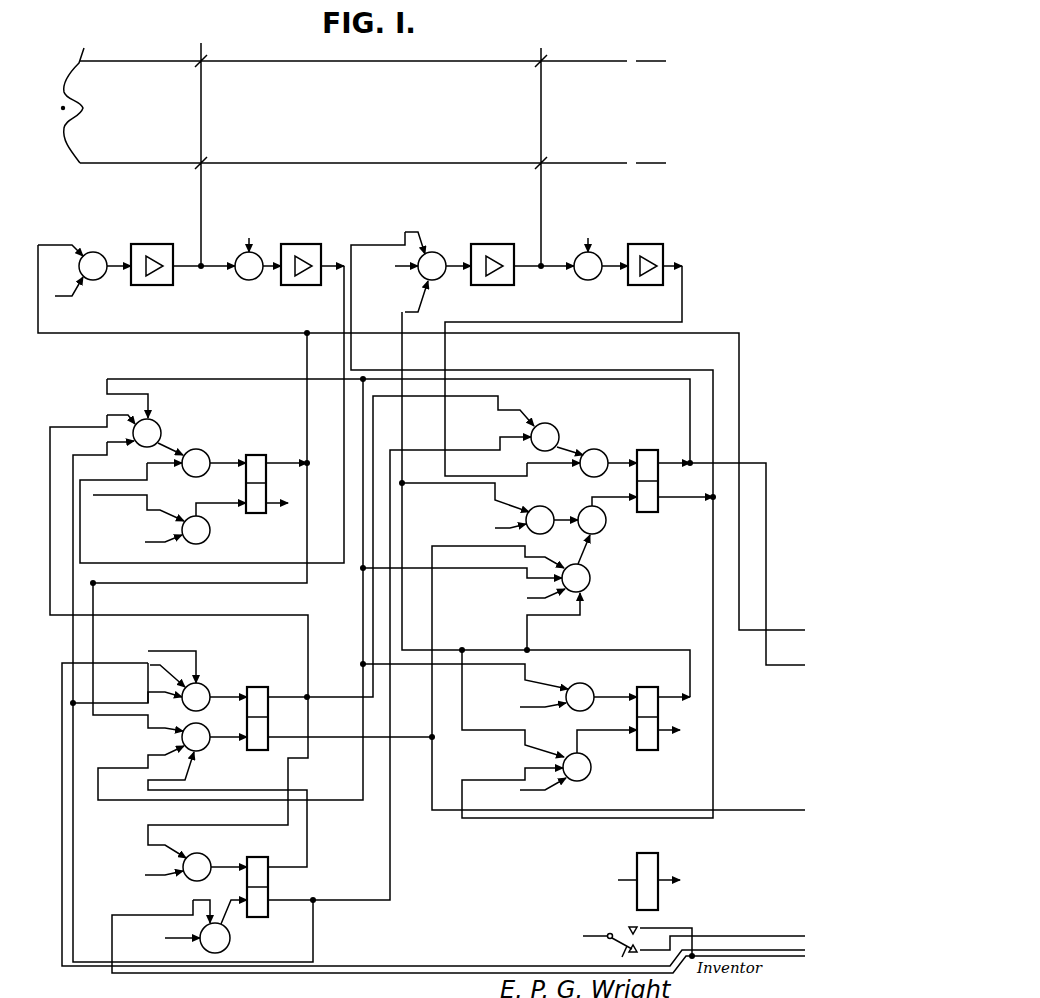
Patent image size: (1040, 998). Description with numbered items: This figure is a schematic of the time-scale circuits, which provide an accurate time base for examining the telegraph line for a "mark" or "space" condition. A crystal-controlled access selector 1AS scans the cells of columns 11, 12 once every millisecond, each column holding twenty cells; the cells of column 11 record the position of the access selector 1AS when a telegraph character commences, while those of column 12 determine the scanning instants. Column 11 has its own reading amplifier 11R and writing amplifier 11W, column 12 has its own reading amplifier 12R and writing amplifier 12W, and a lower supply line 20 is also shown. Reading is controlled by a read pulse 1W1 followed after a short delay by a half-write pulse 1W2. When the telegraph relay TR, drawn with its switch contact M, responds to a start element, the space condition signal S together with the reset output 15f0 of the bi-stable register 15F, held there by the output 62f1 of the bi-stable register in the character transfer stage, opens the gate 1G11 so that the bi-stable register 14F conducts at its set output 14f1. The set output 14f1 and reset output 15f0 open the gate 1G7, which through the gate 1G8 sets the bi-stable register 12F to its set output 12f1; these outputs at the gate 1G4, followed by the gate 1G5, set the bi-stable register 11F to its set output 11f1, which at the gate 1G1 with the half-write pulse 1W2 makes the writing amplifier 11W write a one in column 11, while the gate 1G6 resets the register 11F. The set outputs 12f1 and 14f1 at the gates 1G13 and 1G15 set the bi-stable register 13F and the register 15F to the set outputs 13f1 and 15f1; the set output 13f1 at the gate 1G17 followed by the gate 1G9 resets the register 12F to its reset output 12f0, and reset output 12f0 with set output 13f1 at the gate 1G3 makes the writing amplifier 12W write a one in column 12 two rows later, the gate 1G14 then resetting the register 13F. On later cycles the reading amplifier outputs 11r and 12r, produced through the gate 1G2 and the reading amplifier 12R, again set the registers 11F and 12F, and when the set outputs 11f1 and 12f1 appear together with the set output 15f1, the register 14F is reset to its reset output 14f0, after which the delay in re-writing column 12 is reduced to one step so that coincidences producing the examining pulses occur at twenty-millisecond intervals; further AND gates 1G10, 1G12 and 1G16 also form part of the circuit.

The column 11 is at (197, 145).
The column 12 is at (540, 148).
The access selector 1AS is at (58, 105).
The lower supply line 20 is at (363, 123).
The gate 1G1 is at (105, 258).
The gate 1G2 is at (256, 277).
The gate 1G3 is at (444, 278).
The gate 1G4 is at (380, 353).
The gate 1G5 is at (214, 453).
The gate 1G6 is at (214, 526).
The gate 1G7 is at (562, 432).
The gate 1G8 is at (608, 472).
The gate 1G9 is at (609, 521).
The AND gate 1G10 is at (599, 565).
The gate 1G11 is at (216, 692).
The AND gate 1G12 is at (214, 750).
The gate 1G13 is at (596, 689).
The gate 1G14 is at (603, 756).
The gate 1G15 is at (215, 858).
The AND gate 1G16 is at (223, 926).
The gate 1G17 is at (549, 510).
The writing amplifier 11W is at (183, 253).
The reading amplifier 11R is at (312, 253).
The writing amplifier 12W is at (522, 253).
The reading amplifier 12R is at (563, 349).
The bi-stable register 11F is at (278, 473).
The bi-stable register 12F is at (716, 547).
The bi-stable register 13F is at (661, 708).
The bi-stable register 14F is at (263, 708).
The bi-stable register 15F is at (263, 876).
The read pulse 1W1 is at (362, 448).
The half-write pulse 1W2 is at (307, 603).
The set output of bi-stable register 11f1 is at (421, 481).
The reset output of bi-stable register 12f0 is at (533, 521).
The set output of bi-stable register 12f1 is at (379, 588).
The set output of bi-stable register 13f1 is at (526, 519).
The reset output of bi-stable register 14f0 is at (536, 678).
The set output of bi-stable register 14f1 is at (292, 627).
The reset output of bi-stable register 15f0 is at (295, 694).
The set output of bi-stable register 15f1 is at (208, 809).
The output of bi-stable register in character transfer stage 62f1 is at (458, 932).
The reading amplifier output 11r is at (212, 414).
The reading amplifier output 12r is at (535, 463).
The telegraph relay TR is at (649, 871).
The space condition signal S is at (433, 814).
The switch contact M is at (618, 963).